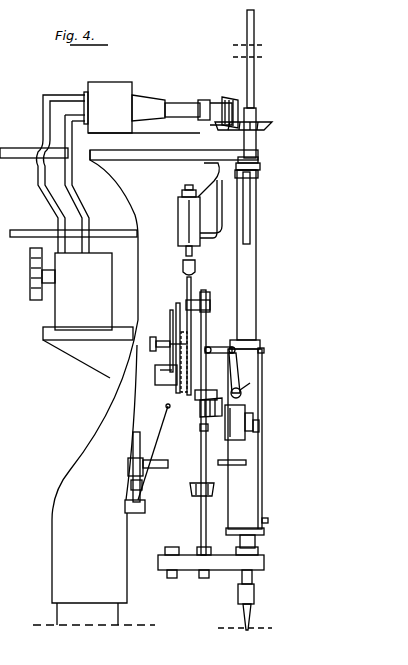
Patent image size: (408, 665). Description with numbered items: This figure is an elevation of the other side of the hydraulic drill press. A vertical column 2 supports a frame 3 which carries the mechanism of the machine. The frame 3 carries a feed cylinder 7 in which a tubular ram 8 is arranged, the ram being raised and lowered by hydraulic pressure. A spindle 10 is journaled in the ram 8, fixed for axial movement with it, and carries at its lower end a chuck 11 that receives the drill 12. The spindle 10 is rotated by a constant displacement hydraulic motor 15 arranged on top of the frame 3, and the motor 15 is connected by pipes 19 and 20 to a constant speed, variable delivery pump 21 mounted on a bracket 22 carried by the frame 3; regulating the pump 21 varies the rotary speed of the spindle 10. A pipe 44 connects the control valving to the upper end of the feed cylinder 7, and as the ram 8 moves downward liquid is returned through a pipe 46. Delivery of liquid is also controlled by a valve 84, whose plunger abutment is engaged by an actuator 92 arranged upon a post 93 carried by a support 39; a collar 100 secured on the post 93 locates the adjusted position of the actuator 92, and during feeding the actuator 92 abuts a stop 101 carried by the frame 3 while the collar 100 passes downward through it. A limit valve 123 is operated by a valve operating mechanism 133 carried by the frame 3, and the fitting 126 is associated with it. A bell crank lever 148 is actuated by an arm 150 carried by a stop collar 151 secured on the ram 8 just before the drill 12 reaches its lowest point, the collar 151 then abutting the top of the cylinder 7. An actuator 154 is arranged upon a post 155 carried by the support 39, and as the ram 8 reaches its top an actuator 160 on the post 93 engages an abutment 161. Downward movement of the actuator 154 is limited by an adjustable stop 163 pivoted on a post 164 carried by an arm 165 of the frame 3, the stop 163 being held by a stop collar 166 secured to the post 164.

The vertical column 2 is at (94, 614).
The frame 3 is at (95, 461).
The feed cylinder 7 is at (245, 442).
The tubular ram 8 is at (283, 551).
The spindle 10 is at (256, 77).
The chuck 11 is at (255, 597).
The drill 12 is at (251, 614).
The hydraulic motor 15 is at (158, 107).
The pipe 19 is at (80, 199).
The pipe 20 is at (45, 110).
The variable delivery pump 21 is at (71, 289).
The bracket 22 is at (88, 352).
The support 39 is at (224, 562).
The pipe 44 is at (263, 351).
The pipe 46 is at (267, 519).
The valve 84 is at (249, 423).
The actuator 92 is at (203, 428).
The post 93 is at (201, 458).
The collar 100 is at (208, 428).
The stop 101 is at (197, 483).
The limit valve 123 is at (180, 204).
The valve fitting 126 is at (184, 259).
The valve operating mechanism 133 is at (185, 323).
The bell crank lever 148 is at (241, 378).
The arm 150 is at (250, 206).
The stop collar 151 is at (258, 175).
The actuator 154 is at (156, 378).
The post 155 is at (166, 406).
The actuator 160 is at (200, 306).
The abutment 161 is at (186, 298).
The adjustable stop 163 is at (133, 458).
The post 164 is at (131, 489).
The arm 165 is at (127, 506).
The stop collar 166 is at (128, 468).